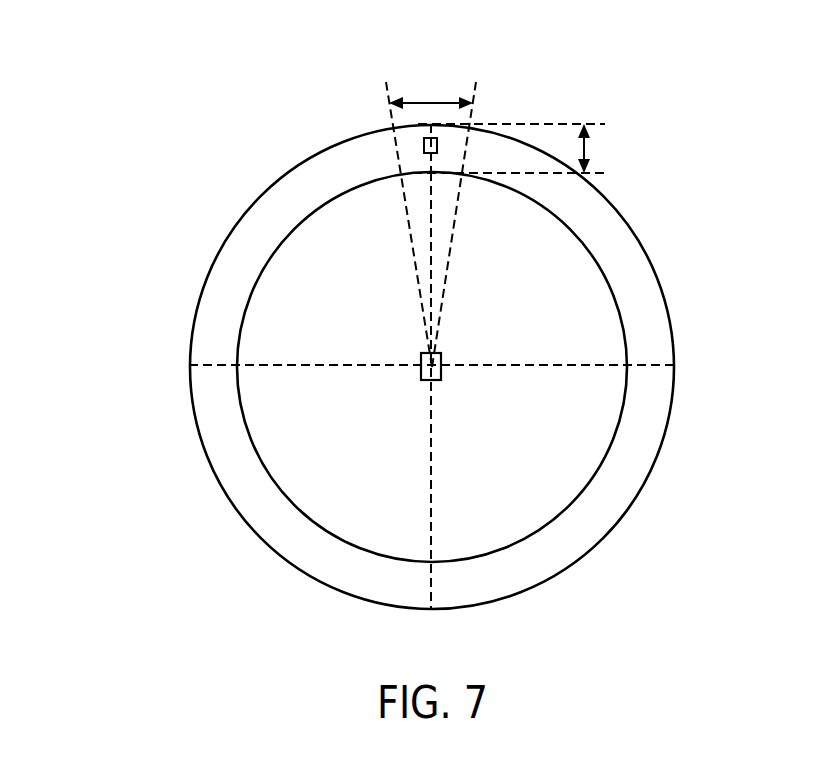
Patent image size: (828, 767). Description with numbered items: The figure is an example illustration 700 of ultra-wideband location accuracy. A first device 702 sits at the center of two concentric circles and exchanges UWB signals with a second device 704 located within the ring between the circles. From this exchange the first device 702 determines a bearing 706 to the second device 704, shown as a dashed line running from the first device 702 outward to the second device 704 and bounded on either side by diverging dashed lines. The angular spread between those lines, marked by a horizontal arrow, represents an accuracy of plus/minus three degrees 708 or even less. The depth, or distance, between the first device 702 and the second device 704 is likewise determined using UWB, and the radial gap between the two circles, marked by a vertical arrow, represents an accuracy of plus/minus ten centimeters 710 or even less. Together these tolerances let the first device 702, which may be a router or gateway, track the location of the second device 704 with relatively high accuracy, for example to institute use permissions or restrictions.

The illustration 700 is at (184, 58).
The first device 702 is at (441, 367).
The second device 704 is at (423, 148).
The bearing 706 is at (430, 228).
The plus/minus three degrees 708 is at (493, 50).
The plus/minus ten centimeters 710 is at (713, 147).